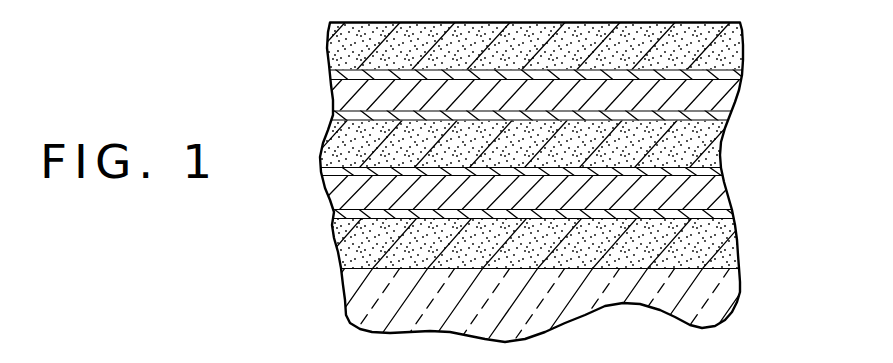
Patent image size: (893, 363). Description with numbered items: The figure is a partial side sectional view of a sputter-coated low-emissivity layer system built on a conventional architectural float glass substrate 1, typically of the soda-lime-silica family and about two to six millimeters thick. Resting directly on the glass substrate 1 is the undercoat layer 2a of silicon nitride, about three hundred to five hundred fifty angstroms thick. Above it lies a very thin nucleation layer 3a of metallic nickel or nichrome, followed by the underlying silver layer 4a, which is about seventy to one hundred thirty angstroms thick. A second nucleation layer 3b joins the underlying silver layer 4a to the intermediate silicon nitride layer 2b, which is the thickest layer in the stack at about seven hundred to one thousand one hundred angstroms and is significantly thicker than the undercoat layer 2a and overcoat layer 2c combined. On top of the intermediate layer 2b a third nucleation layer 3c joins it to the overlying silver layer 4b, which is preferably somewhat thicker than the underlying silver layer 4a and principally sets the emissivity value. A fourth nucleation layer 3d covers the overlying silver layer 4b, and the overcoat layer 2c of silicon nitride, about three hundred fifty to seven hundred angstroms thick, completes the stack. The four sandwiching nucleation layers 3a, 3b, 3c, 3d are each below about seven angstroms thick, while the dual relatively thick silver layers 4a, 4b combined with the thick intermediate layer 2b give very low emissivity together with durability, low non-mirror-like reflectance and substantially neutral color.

The glass substrate 1 is at (723, 298).
The undercoat layer 2a is at (723, 252).
The intermediate Si3N4 layer 2b is at (703, 148).
The overcoat layer 2c is at (728, 48).
The nucleation layer 3a is at (727, 233).
The nucleation layer 3b is at (717, 185).
The nucleation layer 3c is at (707, 123).
The nucleation layer 3d is at (735, 80).
The underlying silver layer 4a is at (717, 200).
The overlying silver layer 4b is at (723, 102).